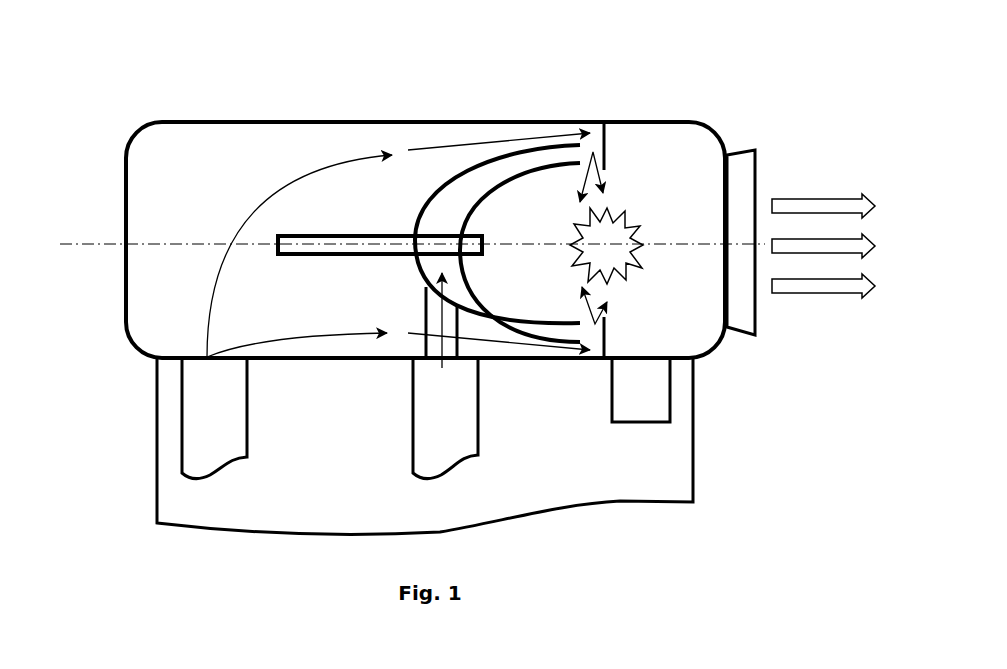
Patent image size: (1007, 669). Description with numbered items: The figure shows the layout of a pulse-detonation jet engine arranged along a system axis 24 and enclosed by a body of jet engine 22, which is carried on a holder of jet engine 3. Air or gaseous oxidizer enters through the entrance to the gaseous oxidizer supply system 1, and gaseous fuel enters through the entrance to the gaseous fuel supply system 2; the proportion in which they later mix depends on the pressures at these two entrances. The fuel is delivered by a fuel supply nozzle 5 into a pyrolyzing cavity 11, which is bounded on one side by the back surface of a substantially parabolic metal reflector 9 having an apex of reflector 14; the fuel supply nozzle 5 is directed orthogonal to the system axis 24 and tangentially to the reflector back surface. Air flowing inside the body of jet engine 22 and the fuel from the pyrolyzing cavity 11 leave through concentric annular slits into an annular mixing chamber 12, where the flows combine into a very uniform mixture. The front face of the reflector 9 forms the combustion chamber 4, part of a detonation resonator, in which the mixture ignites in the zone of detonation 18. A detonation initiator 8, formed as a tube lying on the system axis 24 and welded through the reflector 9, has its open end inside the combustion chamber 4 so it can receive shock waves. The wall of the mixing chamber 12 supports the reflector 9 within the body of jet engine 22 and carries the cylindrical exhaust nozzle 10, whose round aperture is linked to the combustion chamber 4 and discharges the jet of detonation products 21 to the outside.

The entrance to the gaseous oxidizer supply system 1 is at (214, 418).
The entrance to the gaseous fuel supply system 2 is at (445, 376).
The holder of jet engine 3 is at (425, 446).
The combustion chamber 4 is at (535, 231).
The fuel supply nozzle 5 is at (423, 301).
The detonation initiator 8 is at (294, 232).
The metal reflector 9 is at (509, 172).
The exhaust nozzle 10 is at (743, 176).
The cavity in between complementary shaped bodies of rotation 11 is at (454, 211).
The mixing chamber 12 is at (597, 146).
The apex of reflector 14 is at (641, 390).
The zone of detonation 18 is at (608, 248).
The jet of detonation products 21 is at (823, 226).
The body of jet engine 22 is at (124, 236).
The system axis 24 is at (393, 245).